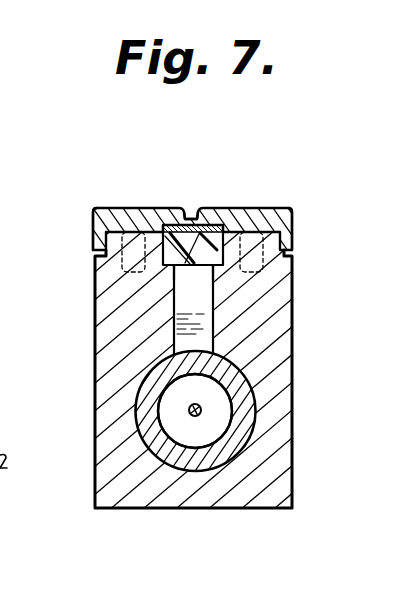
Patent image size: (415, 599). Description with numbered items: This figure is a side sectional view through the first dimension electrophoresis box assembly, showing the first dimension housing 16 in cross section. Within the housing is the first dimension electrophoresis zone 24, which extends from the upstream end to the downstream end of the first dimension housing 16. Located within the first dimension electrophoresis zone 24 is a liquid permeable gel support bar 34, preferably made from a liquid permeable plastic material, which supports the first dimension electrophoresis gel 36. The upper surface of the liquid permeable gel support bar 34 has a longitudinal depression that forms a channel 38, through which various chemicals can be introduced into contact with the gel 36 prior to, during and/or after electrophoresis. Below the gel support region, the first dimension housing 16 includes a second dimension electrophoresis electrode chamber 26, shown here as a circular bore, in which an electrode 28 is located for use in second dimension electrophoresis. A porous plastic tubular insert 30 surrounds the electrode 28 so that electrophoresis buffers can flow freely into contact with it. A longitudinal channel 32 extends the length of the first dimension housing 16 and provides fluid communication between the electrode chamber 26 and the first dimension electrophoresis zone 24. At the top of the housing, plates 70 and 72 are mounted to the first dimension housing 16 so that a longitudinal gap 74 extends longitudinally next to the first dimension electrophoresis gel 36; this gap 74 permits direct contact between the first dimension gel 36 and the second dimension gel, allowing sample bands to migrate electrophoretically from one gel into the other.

The first dimension housing 16 is at (104, 438).
The first dimension electrophoresis zone 24 is at (252, 209).
The second dimension electrophoresis electrode chamber 26 is at (212, 420).
The electrode 28 is at (195, 417).
The porous plastic tubular insert 30 is at (231, 375).
The longitudinal channel 32 is at (214, 321).
The liquid permeable gel support bar 34 is at (167, 238).
The first dimension electrophoresis gel 36 is at (203, 232).
The channel 38 is at (202, 265).
The plate 70 is at (293, 223).
The plate 72 is at (94, 228).
The longitudinal gap 74 is at (190, 218).